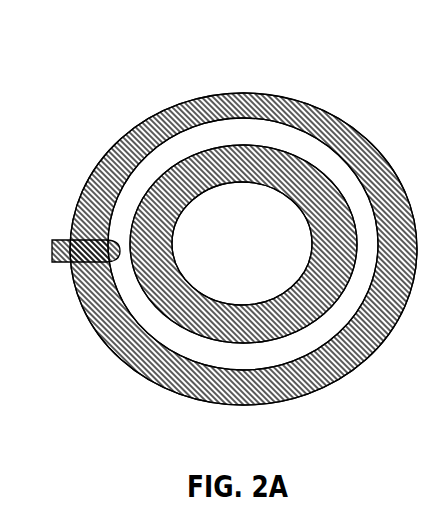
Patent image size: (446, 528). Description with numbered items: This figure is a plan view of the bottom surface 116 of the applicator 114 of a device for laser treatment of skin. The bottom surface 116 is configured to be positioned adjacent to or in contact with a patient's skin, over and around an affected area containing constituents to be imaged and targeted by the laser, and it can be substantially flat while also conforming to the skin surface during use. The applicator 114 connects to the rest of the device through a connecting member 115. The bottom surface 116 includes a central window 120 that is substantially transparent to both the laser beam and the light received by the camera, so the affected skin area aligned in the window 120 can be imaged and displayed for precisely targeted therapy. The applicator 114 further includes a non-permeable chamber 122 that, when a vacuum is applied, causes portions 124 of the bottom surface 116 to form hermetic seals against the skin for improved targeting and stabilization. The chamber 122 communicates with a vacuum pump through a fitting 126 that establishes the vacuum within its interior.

The applicator 114 is at (222, 222).
The connecting member 115 is at (85, 188).
The bottom surface 116 is at (256, 92).
The window 120 is at (259, 218).
The non-permeable chamber 122 is at (338, 324).
The portions of bottom surface 124 is at (152, 311).
The fitting 126 is at (50, 245).